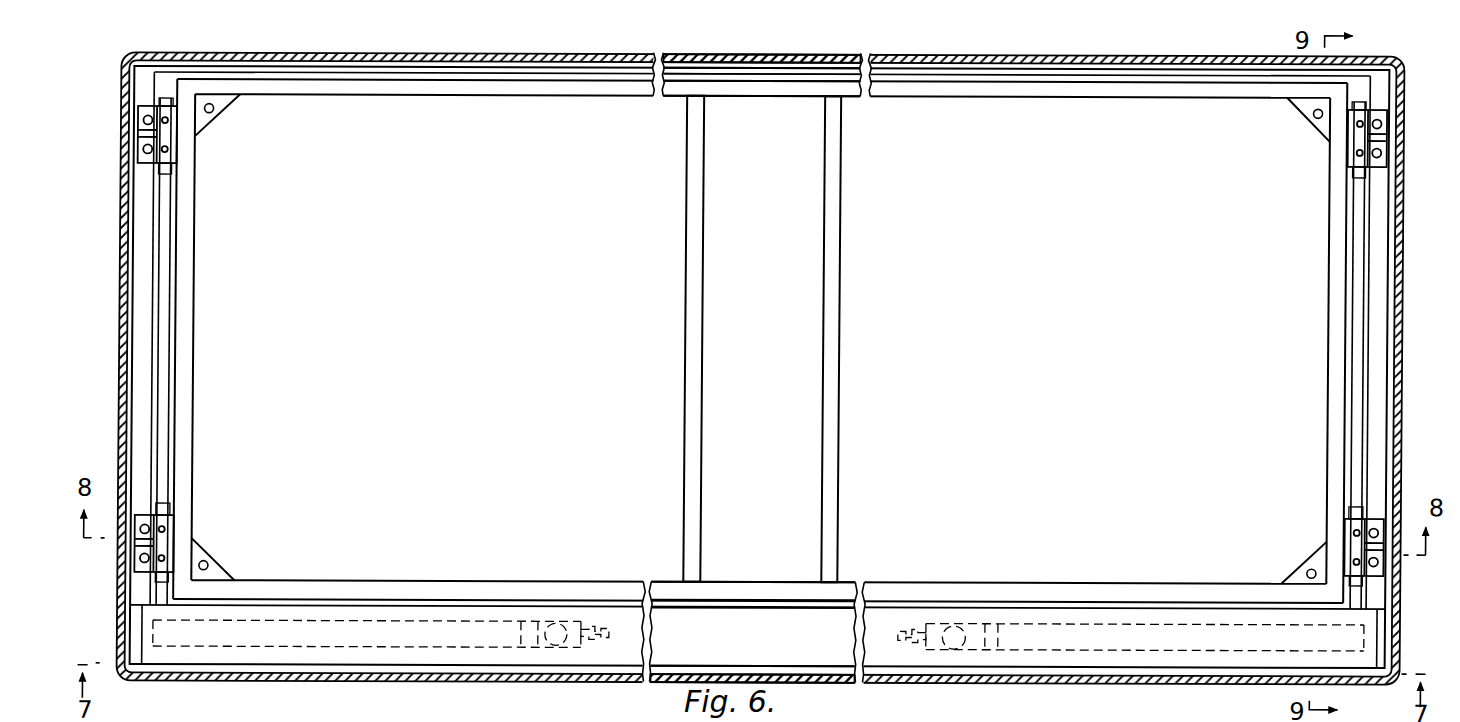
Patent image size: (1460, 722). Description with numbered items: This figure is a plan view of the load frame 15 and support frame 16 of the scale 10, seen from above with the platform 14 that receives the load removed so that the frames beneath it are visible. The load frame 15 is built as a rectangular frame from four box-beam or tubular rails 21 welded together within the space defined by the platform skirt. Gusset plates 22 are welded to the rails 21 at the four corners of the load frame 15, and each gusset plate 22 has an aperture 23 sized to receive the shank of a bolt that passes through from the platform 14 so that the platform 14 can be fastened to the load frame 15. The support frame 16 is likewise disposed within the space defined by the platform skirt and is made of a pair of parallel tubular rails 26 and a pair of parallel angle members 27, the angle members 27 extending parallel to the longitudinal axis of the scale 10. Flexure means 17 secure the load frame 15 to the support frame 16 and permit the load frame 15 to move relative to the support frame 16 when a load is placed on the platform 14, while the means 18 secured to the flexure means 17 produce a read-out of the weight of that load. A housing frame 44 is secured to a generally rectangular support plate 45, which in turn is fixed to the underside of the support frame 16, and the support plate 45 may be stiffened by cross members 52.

The scale 10 is at (788, 358).
The platform 14 is at (1424, 232).
The load frame 15 is at (760, 341).
The support frame 16 is at (1358, 315).
The flexure means 17 is at (168, 138).
The means for producing a read-out 18 is at (396, 621).
The rails 21 is at (183, 397).
The gusset plates 22 is at (222, 102).
The aperture 23 is at (210, 118).
The rails 26 is at (142, 337).
The angle members 27 is at (1133, 78).
The housing frame 44 is at (742, 621).
The support plate 45 is at (783, 108).
The cross members 52 is at (826, 200).